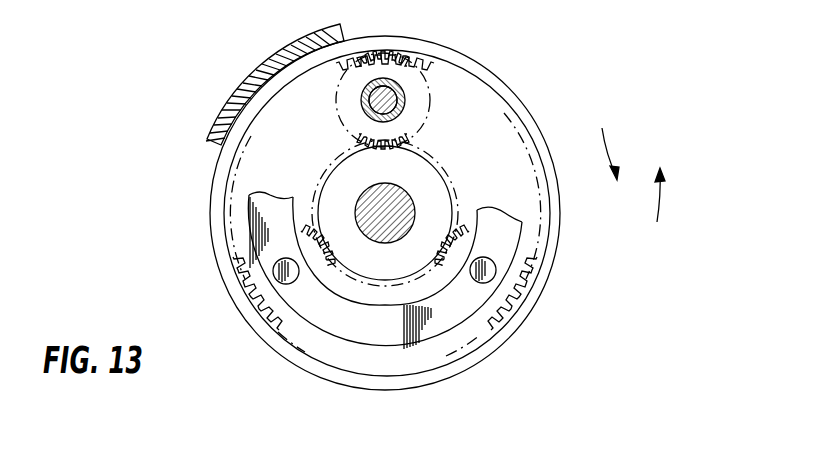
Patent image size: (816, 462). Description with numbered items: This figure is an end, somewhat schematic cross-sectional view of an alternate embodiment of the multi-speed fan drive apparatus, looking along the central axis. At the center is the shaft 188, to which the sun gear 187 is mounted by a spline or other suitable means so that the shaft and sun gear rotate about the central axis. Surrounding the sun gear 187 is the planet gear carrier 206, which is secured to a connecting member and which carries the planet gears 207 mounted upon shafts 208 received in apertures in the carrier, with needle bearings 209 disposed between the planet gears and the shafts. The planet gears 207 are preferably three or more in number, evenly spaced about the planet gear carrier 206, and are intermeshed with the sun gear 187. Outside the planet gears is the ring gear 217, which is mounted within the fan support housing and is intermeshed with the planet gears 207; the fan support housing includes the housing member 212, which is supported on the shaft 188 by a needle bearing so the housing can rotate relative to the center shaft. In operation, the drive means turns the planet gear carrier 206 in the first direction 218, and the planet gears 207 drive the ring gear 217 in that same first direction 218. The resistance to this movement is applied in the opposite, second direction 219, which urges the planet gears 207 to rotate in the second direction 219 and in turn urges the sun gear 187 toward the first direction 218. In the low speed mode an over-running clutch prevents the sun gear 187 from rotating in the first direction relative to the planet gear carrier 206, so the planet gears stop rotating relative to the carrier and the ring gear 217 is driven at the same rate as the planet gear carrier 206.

The sun gear 187 is at (353, 182).
The shaft 188 is at (405, 197).
The planet gear carrier 206 is at (262, 208).
The planet gears 207 is at (353, 92).
The shafts 208 is at (400, 106).
The needle bearings 209 is at (365, 108).
The housing member 212 is at (250, 90).
The ring gear 217 is at (448, 57).
The first direction 218 is at (612, 142).
The second direction 219 is at (662, 197).